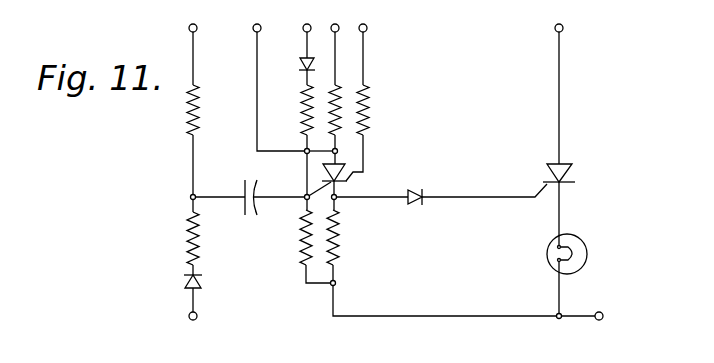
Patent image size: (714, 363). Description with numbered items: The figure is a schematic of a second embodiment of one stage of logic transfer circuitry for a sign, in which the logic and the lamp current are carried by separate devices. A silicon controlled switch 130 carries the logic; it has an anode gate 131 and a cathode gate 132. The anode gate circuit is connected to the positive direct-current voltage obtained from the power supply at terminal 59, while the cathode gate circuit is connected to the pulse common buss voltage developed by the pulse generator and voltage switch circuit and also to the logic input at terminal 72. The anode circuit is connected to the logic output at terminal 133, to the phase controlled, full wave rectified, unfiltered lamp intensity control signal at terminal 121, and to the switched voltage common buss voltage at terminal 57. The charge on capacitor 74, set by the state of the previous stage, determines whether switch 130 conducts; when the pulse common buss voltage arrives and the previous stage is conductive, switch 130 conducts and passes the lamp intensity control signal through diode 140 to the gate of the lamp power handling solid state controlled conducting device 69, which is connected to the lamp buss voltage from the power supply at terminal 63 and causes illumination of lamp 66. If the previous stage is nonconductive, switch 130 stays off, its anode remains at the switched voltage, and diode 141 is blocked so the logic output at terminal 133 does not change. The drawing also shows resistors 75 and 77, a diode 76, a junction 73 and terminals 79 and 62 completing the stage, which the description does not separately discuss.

The logic input terminal 72 is at (189, 28).
The resistor 75 is at (188, 125).
The diode 76 is at (202, 281).
The terminal +V_Pc 79 is at (189, 313).
The capacitor 74 is at (250, 211).
The logic output terminal 133 is at (253, 31).
The lamp intensity control signal terminal 121 is at (302, 29).
The diode 141 is at (300, 73).
The switched voltage terminal 57 is at (333, 31).
The positive D.C. voltage terminal 59 is at (368, 32).
The junction 73 is at (348, 150).
The silicon controlled switch 130 is at (325, 166).
The anode gate 131 is at (352, 177).
The cathode gate 132 is at (305, 186).
The resistor 77 is at (300, 253).
The diode 140 is at (475, 208).
The lamp buss voltage terminal 63 is at (563, 28).
The solid state controlled conducting device 69 is at (567, 173).
The lamp 66 is at (587, 256).
The output terminal 62 is at (591, 327).